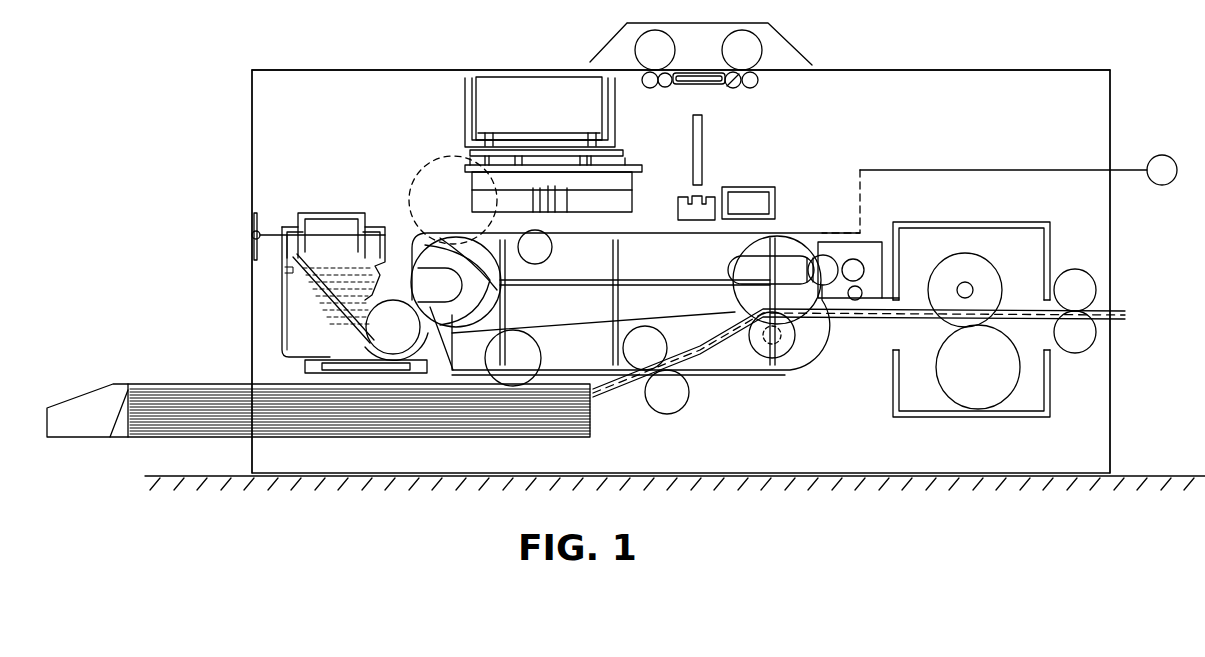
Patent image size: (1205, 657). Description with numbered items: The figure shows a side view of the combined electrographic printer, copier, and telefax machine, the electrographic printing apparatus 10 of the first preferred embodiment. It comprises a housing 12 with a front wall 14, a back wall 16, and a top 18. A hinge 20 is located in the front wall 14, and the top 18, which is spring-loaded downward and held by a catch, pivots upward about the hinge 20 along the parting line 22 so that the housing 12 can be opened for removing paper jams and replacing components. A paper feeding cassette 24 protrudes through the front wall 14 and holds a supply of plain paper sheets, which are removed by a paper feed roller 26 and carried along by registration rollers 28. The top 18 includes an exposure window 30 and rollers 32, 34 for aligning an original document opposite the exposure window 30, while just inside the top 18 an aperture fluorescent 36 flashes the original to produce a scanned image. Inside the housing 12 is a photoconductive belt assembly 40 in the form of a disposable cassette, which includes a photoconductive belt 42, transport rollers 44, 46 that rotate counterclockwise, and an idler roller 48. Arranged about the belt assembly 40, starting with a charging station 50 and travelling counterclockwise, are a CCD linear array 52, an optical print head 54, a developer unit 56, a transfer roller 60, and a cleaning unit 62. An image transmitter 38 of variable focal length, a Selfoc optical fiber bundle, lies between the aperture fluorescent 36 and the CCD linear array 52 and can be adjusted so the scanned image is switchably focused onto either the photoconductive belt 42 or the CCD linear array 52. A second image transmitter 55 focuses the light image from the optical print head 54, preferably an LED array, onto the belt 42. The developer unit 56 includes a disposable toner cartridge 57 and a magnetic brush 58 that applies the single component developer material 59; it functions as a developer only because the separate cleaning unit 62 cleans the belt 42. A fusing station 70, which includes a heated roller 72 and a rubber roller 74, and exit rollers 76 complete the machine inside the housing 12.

The electrographic printing apparatus 10 is at (240, 119).
The housing 12 is at (885, 74).
The front wall 14 is at (252, 174).
The back wall 16 is at (1110, 216).
The top 18 is at (984, 70).
The hinge 20 is at (248, 239).
The parting line 22 is at (962, 170).
The paper feeding cassette 24 is at (216, 372).
The paper feed roller 26 is at (522, 354).
The registration rollers 28 is at (672, 401).
The exposure window 30 is at (698, 72).
The roller 32 is at (638, 50).
The roller 34 is at (743, 45).
The aperture fluorescent 36 is at (745, 70).
The image transmitter 38 is at (702, 146).
The photoconductive belt assembly 40 is at (818, 236).
The photoconductive belt 42 is at (654, 227).
The transport roller 44 is at (482, 300).
The transport roller 46 is at (740, 257).
The idler roller 48 is at (548, 249).
The charging station 50 is at (748, 186).
The CCD linear array 52 is at (678, 208).
The optical print head 54 is at (530, 116).
The second image transmitter 55 is at (543, 197).
The developer unit 56 is at (334, 212).
The disposable toner cartridge 57 is at (312, 247).
The magnetic brush 58 is at (386, 337).
The developer material 59 is at (338, 312).
The transfer roller 60 is at (795, 354).
The cleaning unit 62 is at (846, 248).
The fusing station 70 is at (1007, 223).
The heated roller 72 is at (949, 283).
The rubber roller 74 is at (980, 390).
The exit rollers 76 is at (1076, 344).